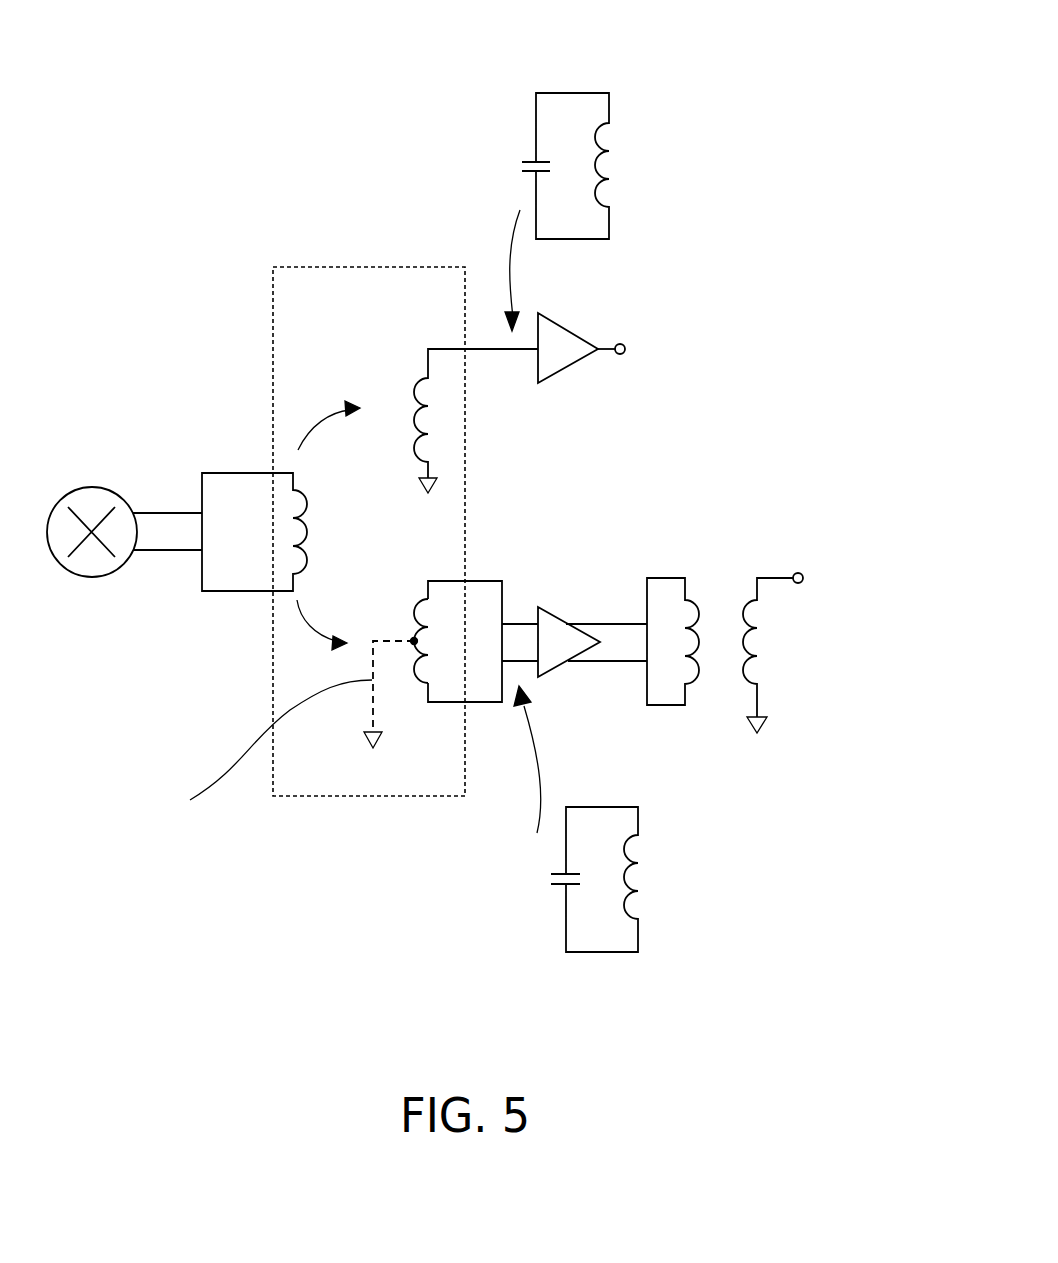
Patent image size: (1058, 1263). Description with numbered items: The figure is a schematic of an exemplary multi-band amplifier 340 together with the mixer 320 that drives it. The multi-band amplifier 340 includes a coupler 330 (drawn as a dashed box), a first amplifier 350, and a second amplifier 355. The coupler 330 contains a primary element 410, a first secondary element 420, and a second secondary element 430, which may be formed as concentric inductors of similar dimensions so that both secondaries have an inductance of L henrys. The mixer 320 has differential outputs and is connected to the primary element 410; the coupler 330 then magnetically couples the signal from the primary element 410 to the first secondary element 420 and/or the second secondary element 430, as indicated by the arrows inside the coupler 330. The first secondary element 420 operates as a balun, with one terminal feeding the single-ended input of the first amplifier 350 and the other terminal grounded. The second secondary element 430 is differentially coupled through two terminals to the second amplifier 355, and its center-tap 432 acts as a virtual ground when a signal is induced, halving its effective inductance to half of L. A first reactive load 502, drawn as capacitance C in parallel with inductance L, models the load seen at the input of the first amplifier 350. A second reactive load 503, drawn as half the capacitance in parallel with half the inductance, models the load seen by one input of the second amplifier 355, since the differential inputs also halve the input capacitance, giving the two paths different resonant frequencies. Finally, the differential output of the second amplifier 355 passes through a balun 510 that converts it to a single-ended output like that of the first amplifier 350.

The multi-band amplifier 340 is at (597, 31).
The mixer 320 is at (107, 578).
The primary element 410 is at (285, 545).
The coupler 330 is at (283, 267).
The first secondary element 420 is at (420, 378).
The second secondary element 430 is at (422, 687).
The center-tap 432 is at (413, 641).
The first amplifier 350 is at (565, 368).
The second amplifier 355 is at (553, 611).
The first reactive load 502 is at (609, 239).
The second reactive load 503 is at (638, 952).
The balun 510 is at (757, 655).